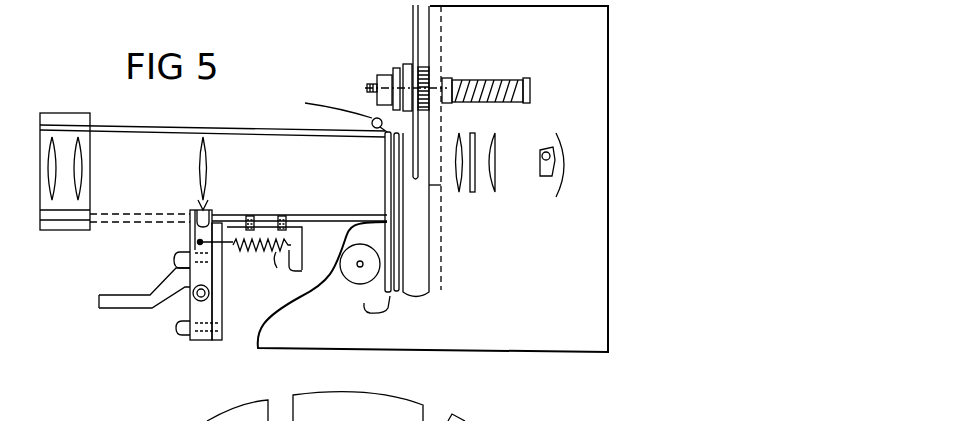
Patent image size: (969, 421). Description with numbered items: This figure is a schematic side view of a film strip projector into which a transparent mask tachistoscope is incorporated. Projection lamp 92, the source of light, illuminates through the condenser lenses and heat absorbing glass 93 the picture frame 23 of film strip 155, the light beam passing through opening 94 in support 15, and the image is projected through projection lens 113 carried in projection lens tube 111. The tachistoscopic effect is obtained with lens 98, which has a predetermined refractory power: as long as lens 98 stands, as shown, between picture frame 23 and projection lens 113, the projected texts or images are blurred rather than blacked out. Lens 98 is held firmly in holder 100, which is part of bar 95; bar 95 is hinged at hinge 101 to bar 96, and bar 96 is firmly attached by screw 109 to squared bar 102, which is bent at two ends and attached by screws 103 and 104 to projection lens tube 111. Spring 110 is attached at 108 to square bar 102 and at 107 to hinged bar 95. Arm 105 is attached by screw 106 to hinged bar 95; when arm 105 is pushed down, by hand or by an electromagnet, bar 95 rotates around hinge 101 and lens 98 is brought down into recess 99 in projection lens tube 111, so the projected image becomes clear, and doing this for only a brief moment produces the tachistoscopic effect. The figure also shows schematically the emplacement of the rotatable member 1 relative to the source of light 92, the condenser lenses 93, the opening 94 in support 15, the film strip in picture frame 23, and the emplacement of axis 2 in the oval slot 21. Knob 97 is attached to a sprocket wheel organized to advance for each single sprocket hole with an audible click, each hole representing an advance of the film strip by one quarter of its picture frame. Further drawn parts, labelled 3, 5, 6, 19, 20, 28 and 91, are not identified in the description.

The rotatable member 1 is at (413, 32).
The axis 2 is at (367, 88).
The collar 3 is at (385, 75).
The washer 5 is at (398, 68).
The gear 6 is at (430, 60).
The support 15 is at (442, 32).
The end cap 19 is at (530, 88).
The worm 20 is at (512, 80).
The oval slot 21 is at (436, 108).
The picture frame 23 is at (387, 163).
The worm thread 28 is at (451, 81).
The housing 91 is at (609, 122).
The projection lamp 92 is at (553, 178).
The condenser lenses and heat absorbing glass 93 is at (486, 136).
The opening 94 is at (440, 177).
The hinged bar 95 is at (199, 242).
The bar 96 is at (207, 308).
The knob 97 is at (358, 284).
The lens 98 is at (208, 158).
The recess 99 is at (150, 212).
The holder 100 is at (210, 216).
The hinge 101 is at (187, 312).
The squared bar 102 is at (300, 227).
The screw 103 is at (281, 216).
The screw 104 is at (258, 216).
The arm 105 is at (128, 288).
The screw 106 is at (167, 260).
The spring attachment point 107 is at (262, 251).
The spring attachment point 108 is at (315, 255).
The screw 109 is at (190, 327).
The spring 110 is at (275, 258).
The projection lens tube 111 is at (303, 135).
The projection lens 113 is at (90, 156).
The film strip 155 is at (325, 112).